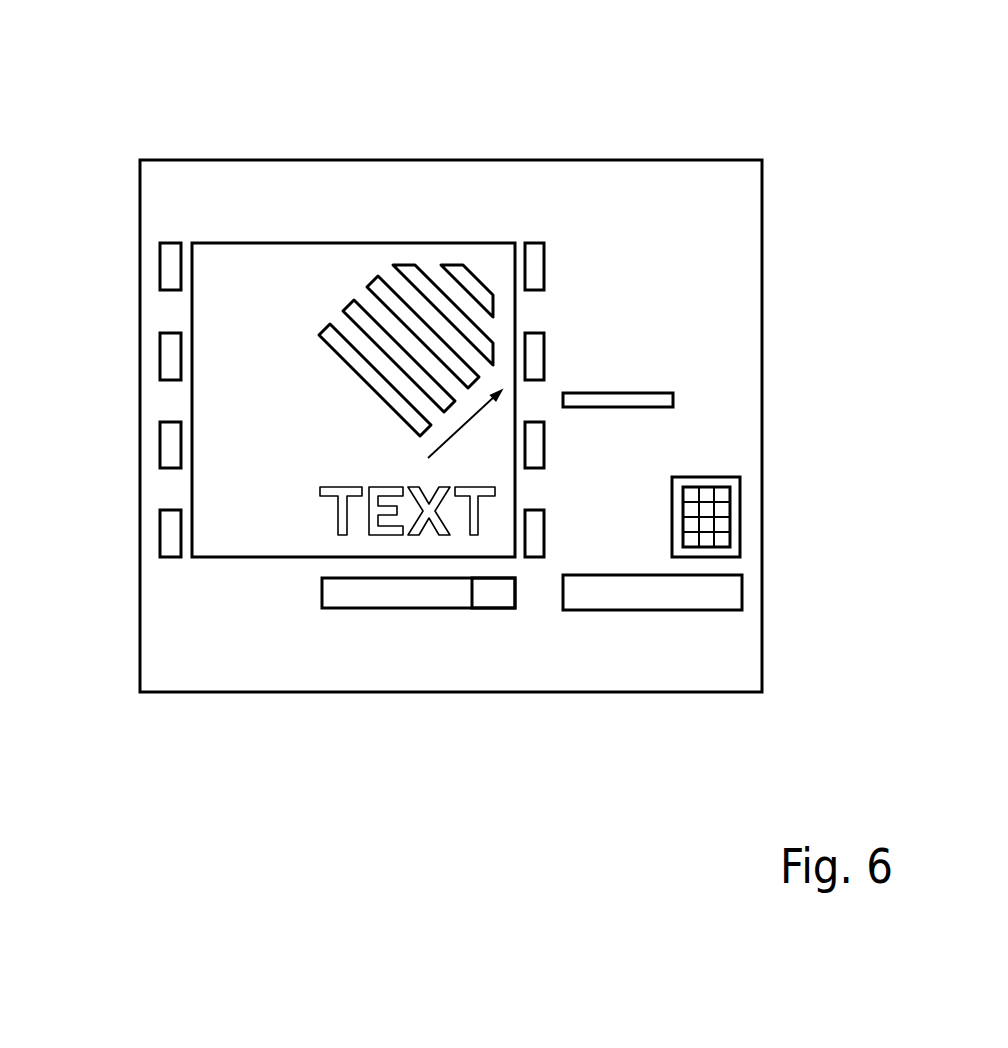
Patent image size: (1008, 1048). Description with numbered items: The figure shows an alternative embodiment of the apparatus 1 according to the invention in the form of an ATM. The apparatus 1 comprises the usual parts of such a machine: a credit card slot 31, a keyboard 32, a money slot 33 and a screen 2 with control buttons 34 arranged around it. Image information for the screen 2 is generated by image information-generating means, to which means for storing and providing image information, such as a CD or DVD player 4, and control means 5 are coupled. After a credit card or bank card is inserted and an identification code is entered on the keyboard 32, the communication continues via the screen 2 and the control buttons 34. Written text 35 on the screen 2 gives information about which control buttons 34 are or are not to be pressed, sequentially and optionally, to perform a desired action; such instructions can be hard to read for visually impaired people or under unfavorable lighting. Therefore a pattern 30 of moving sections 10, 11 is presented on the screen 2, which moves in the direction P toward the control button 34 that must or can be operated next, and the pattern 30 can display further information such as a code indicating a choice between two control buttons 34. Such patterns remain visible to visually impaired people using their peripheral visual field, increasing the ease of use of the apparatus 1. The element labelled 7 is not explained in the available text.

The apparatus 1 is at (108, 107).
The screen 2 is at (215, 495).
The CD or DVD player 4 is at (418, 695).
The control means 5 is at (780, 493).
The key 7 is at (495, 597).
The moving section 10 is at (351, 218).
The moving section 11 is at (400, 234).
The pattern 30 is at (374, 232).
The credit card slot 31 is at (673, 400).
The keyboard 32 is at (740, 517).
The money slot 33 is at (652, 597).
The control buttons 34 is at (160, 355).
The written text 35 is at (376, 649).